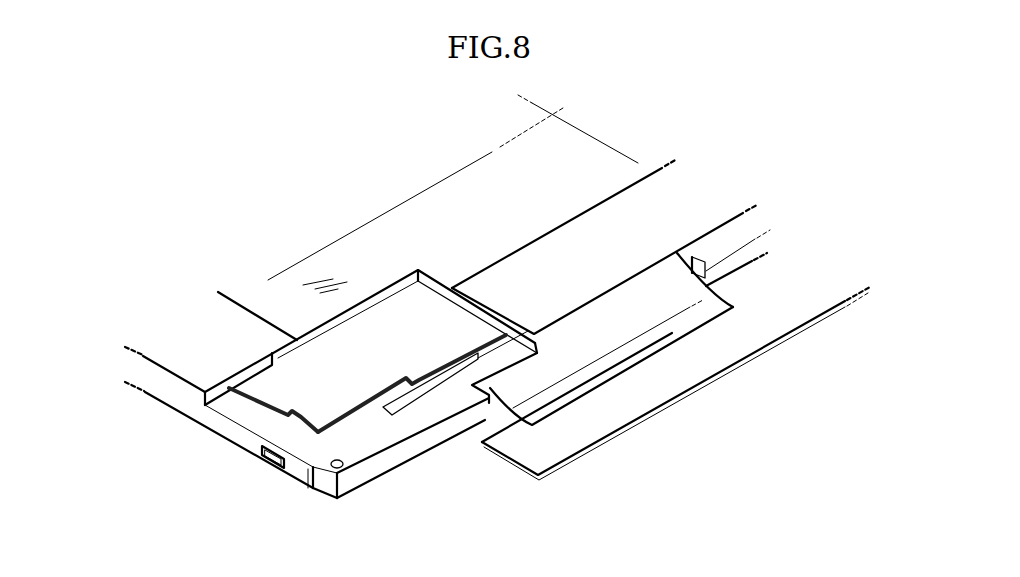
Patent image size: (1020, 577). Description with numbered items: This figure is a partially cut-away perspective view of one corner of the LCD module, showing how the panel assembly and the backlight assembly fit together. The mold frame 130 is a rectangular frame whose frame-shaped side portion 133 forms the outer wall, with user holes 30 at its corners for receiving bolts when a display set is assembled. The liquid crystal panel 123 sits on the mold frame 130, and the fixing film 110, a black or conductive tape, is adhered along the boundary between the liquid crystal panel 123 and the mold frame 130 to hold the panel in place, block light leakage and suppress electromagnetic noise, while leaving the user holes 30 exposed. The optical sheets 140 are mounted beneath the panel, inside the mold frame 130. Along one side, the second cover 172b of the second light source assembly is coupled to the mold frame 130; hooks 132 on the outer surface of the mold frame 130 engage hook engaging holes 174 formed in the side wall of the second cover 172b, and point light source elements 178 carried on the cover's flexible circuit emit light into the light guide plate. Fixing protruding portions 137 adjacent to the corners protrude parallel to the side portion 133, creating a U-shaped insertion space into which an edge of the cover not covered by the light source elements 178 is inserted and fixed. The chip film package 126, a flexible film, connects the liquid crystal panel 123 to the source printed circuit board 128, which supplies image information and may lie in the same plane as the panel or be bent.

The fixing film 110 is at (190, 363).
The liquid crystal panel 123 is at (403, 283).
The chip film package 126 is at (563, 400).
The source printed circuit board 128 is at (547, 457).
The mold frame 130 is at (403, 476).
The hooks 132 is at (270, 467).
The side portion 133 is at (353, 458).
The fixing protruding portions 137 is at (395, 398).
The optical sheets 140 is at (322, 415).
The second cover 172b is at (208, 422).
The hook engaging holes 174 is at (260, 447).
The point light source elements 178 is at (441, 372).
The user holes 30 is at (344, 476).